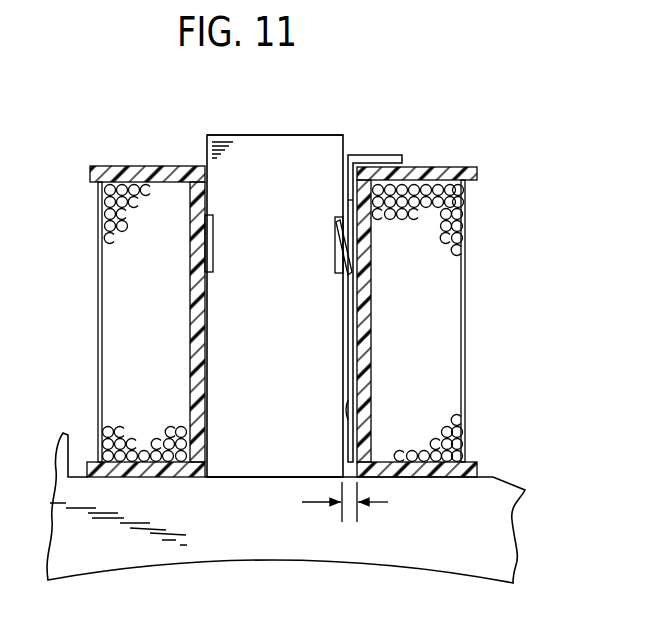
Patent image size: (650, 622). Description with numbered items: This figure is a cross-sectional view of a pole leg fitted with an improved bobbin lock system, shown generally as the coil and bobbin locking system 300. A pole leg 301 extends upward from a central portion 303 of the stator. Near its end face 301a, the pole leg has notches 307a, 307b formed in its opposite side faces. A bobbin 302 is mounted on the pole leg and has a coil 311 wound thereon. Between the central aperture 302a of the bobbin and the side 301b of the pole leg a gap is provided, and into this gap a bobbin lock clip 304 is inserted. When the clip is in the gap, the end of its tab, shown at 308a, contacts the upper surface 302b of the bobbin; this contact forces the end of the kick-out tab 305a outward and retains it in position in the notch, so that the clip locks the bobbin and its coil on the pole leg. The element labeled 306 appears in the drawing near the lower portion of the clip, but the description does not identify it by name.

The coil and bobbin locking system 300 is at (350, 130).
The pole leg 301 is at (290, 345).
The end face 301a is at (250, 135).
The side of the pole leg 301b is at (342, 462).
The bobbin 302 is at (444, 352).
The central aperture 302a is at (358, 447).
The upper surface of the bobbin 302b is at (150, 166).
The central portion of the stator 303 is at (246, 554).
The bobbin lock clip 304 is at (357, 209).
The kick-out tab 305a is at (343, 245).
The lower portion of shield plate 306 is at (347, 410).
The notch 307a is at (347, 243).
The notch 307b is at (216, 240).
The end of the tab 308a is at (400, 160).
The coil 311 is at (465, 360).